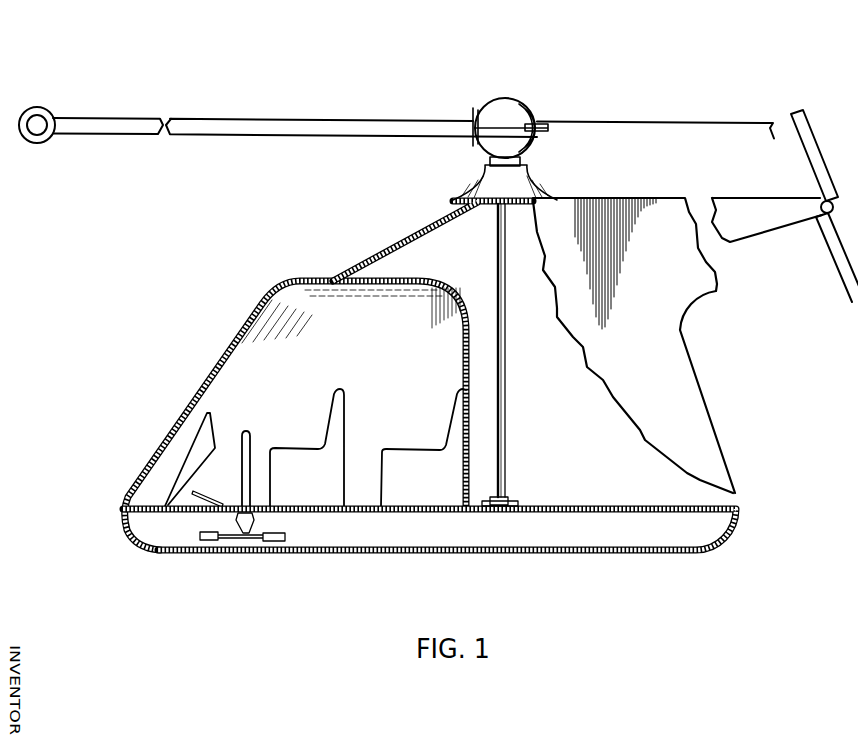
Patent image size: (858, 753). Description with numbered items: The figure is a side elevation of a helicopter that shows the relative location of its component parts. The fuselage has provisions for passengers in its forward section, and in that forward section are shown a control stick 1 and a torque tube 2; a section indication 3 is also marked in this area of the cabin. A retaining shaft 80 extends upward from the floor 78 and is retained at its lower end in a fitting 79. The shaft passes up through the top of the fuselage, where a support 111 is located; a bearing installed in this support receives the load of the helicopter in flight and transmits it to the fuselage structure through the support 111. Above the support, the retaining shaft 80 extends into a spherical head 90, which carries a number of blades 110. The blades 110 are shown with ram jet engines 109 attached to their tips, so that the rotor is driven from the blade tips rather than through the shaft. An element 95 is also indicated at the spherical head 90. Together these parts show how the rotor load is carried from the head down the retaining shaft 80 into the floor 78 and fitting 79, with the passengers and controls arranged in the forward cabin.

The control stick 1 is at (250, 448).
The torque tube 2 is at (246, 533).
The section line 3- 3 is at (302, 496).
The floor 78 is at (598, 507).
The fitting 79 is at (508, 500).
The retaining shaft 80 is at (506, 410).
The spherical head 90 is at (526, 108).
The rotor yoke 95 is at (530, 153).
The ram jet engines 109 is at (48, 139).
The blades 110 is at (250, 136).
The support 111 is at (482, 173).